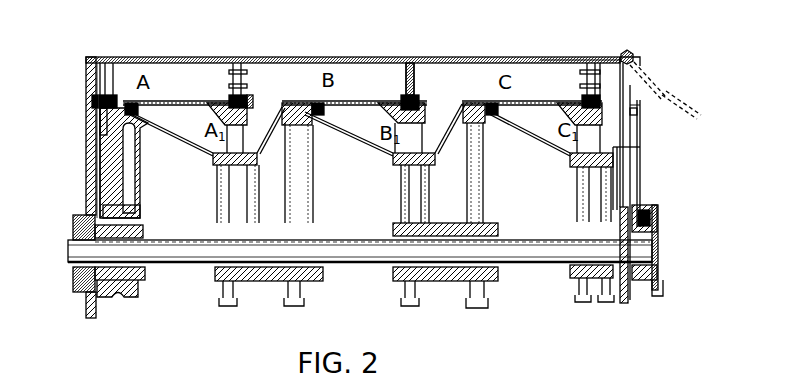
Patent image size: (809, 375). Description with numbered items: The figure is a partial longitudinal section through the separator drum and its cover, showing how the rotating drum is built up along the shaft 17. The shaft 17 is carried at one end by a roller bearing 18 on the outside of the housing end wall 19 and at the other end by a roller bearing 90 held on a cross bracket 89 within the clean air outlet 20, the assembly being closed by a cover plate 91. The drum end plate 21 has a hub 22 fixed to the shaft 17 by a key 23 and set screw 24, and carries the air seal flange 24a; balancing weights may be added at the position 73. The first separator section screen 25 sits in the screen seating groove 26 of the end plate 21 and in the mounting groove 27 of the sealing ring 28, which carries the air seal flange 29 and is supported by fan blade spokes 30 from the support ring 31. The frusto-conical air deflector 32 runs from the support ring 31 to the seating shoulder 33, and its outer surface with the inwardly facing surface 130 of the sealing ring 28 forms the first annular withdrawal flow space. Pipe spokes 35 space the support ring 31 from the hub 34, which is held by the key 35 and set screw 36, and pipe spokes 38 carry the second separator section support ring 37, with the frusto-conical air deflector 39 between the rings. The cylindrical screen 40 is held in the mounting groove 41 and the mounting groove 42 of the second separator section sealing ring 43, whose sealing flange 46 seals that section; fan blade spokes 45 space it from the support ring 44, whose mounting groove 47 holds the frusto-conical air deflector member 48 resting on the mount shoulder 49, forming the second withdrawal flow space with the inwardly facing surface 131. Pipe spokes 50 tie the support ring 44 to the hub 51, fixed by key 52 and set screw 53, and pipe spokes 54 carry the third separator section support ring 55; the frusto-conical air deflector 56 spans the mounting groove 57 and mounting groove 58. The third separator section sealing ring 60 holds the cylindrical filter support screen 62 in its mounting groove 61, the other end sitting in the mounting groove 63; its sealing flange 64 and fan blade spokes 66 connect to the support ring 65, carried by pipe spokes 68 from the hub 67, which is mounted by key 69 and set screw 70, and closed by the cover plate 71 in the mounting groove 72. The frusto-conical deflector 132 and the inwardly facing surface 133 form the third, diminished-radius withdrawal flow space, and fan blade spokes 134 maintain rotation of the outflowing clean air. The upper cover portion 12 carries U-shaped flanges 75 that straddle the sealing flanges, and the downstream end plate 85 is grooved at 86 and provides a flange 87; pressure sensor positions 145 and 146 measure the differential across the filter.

The upper cover portion 12 is at (176, 57).
The shaft 17 is at (178, 246).
The roller bearing 18 is at (78, 228).
The housing end wall 19 is at (90, 150).
The clean air outlet 20 is at (684, 106).
The drum end plate 21 is at (135, 170).
The hub 22 is at (143, 233).
The key 23 is at (120, 288).
The set screw 24 is at (140, 218).
The air seal flange 24a is at (93, 100).
The first separator section screen 25 is at (175, 101).
The screen seating groove 26 is at (131, 101).
The mounting groove 27 is at (246, 72).
The sealing ring 28 is at (252, 100).
The air seal flange 29 is at (247, 86).
The fan blade spokes 30 is at (245, 112).
The support ring 31 is at (260, 188).
The frusto-conical air deflector 32 is at (168, 132).
The seating shoulder 33 is at (118, 172).
The hub 34 is at (218, 288).
The pipe spokes 35 is at (230, 190).
The set screw 36 is at (314, 205).
The second separator section support ring 37 is at (286, 103).
The pipe spokes 38 is at (305, 178).
The frusto-conical air deflector 39 is at (268, 138).
The cylindrical screen 40 is at (372, 101).
The mounting groove 41 is at (320, 101).
The mounting groove 42 is at (410, 62).
The second separator section sealing ring 43 is at (466, 103).
The second separator section sealing ring support ring 44 is at (401, 190).
The fan blade spokes 45 is at (423, 123).
The sealing flange 46 is at (422, 101).
The mounting groove 47 is at (395, 164).
The frusto-conical air deflector member 48 is at (352, 136).
The mount shoulder 49 is at (336, 128).
The pipe spokes 50 is at (402, 210).
The hub 51 is at (500, 305).
The key 52 is at (498, 258).
The set screw 53 is at (499, 230).
The pipe spokes 54 is at (486, 200).
The third separator section support ring 55 is at (484, 150).
The frusto-conical air deflector 56 is at (436, 160).
The mounting groove 57 is at (430, 198).
The mounting groove 58 is at (488, 101).
The third separator section sealing ring 60 is at (548, 57).
The mounting groove 61 is at (565, 103).
The cylindrical filter support screen 62 is at (510, 101).
The mounting groove 63 is at (530, 101).
The sealing flange 64 is at (652, 86).
The third separator section sealing ring support ring 65 is at (536, 158).
The fan blade spokes 66 is at (578, 195).
The hub 67 is at (657, 212).
The pipe spokes 68 is at (578, 220).
The key 69 is at (578, 283).
The set screw 70 is at (627, 203).
The cover plate 71 is at (641, 178).
The mounting groove 72 is at (619, 165).
The balancing weight position 73 is at (100, 118).
The U-shaped flanges 75 is at (117, 62).
The downstream end plate 85 is at (638, 112).
The groove 86 is at (641, 57).
The flange 87 is at (634, 59).
The cross bracket 89 is at (658, 224).
The roller bearing 90 is at (658, 280).
The cover plate 91 is at (659, 245).
The inwardly facing surface 130 is at (195, 101).
The inwardly facing surface 131 is at (365, 101).
The frusto-conical deflector 132 is at (572, 162).
The inwardly facing surface 133 is at (580, 70).
The fan blade spokes 134 is at (612, 150).
The pressure sensor position 145 is at (582, 84).
The pressure sensor position 146 is at (624, 60).